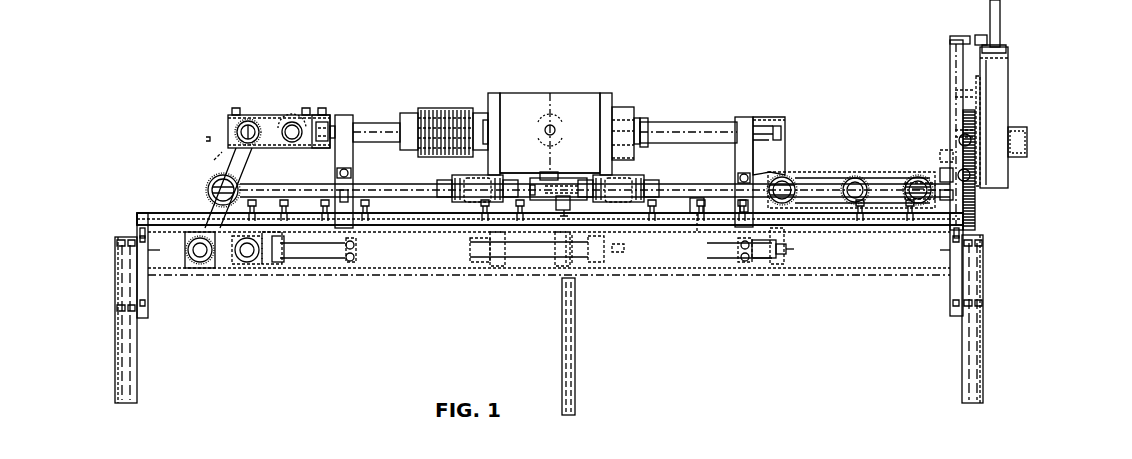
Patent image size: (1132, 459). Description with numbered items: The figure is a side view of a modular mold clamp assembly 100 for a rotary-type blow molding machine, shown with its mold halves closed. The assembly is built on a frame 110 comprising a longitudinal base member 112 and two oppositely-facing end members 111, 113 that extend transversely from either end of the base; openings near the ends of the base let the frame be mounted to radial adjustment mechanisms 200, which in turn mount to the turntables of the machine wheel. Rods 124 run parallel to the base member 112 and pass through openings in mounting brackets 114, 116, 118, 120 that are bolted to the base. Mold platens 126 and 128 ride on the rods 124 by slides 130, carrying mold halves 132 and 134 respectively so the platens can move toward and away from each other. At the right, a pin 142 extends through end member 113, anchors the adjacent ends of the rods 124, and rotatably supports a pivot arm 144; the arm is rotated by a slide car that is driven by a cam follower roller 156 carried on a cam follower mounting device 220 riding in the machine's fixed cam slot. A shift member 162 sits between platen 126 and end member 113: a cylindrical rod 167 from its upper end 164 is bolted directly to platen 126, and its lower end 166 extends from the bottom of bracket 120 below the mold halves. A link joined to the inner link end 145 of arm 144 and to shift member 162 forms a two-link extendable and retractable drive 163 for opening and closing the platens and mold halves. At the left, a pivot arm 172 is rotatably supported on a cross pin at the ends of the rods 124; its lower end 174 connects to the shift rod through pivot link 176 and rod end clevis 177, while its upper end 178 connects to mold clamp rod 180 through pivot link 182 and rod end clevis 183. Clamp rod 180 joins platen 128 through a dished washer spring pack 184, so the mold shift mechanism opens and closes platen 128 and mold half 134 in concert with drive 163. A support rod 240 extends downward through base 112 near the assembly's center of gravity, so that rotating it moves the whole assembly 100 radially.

The modular mold clamp assembly 100 is at (205, 62).
The frame 110 is at (108, 190).
The end member 111 is at (136, 263).
The base member 112 is at (832, 270).
The end member 113 is at (962, 268).
The mounting bracket 114 is at (270, 262).
The mounting bracket 116 is at (351, 262).
The mounting bracket 118 is at (552, 212).
The mounting bracket 120 is at (742, 262).
The rods 124 is at (695, 205).
The mold platen 126 is at (606, 94).
The mold platen 128 is at (493, 96).
The slides 130 is at (620, 205).
The mold half 132 is at (572, 98).
The mold half 134 is at (533, 98).
The pin 142 is at (970, 195).
The pivot arm 144 is at (918, 205).
The inner link end 145 is at (855, 178).
The cam follower roller 156 is at (1030, 140).
The shift member 162 is at (778, 140).
The two-link extendable and retractable drive 163 is at (886, 212).
The upper end 164 is at (764, 118).
The lower end 166 is at (778, 262).
The cylindrical rod 167 is at (707, 130).
The pivot arm 172 is at (224, 150).
The lower end 174 is at (200, 262).
The pivot link 176 is at (247, 262).
The rod end clevis 177 is at (286, 260).
The upper end 178 is at (246, 122).
The mold clamp rod 180 is at (367, 118).
The pivot link 182 is at (284, 122).
The rod end clevis 183 is at (322, 112).
The dished washer spring pack 184 is at (446, 108).
The radial adjustment mechanisms 200 is at (990, 338).
The cam follower mounting device 220 is at (1012, 72).
The support rod 240 is at (576, 378).